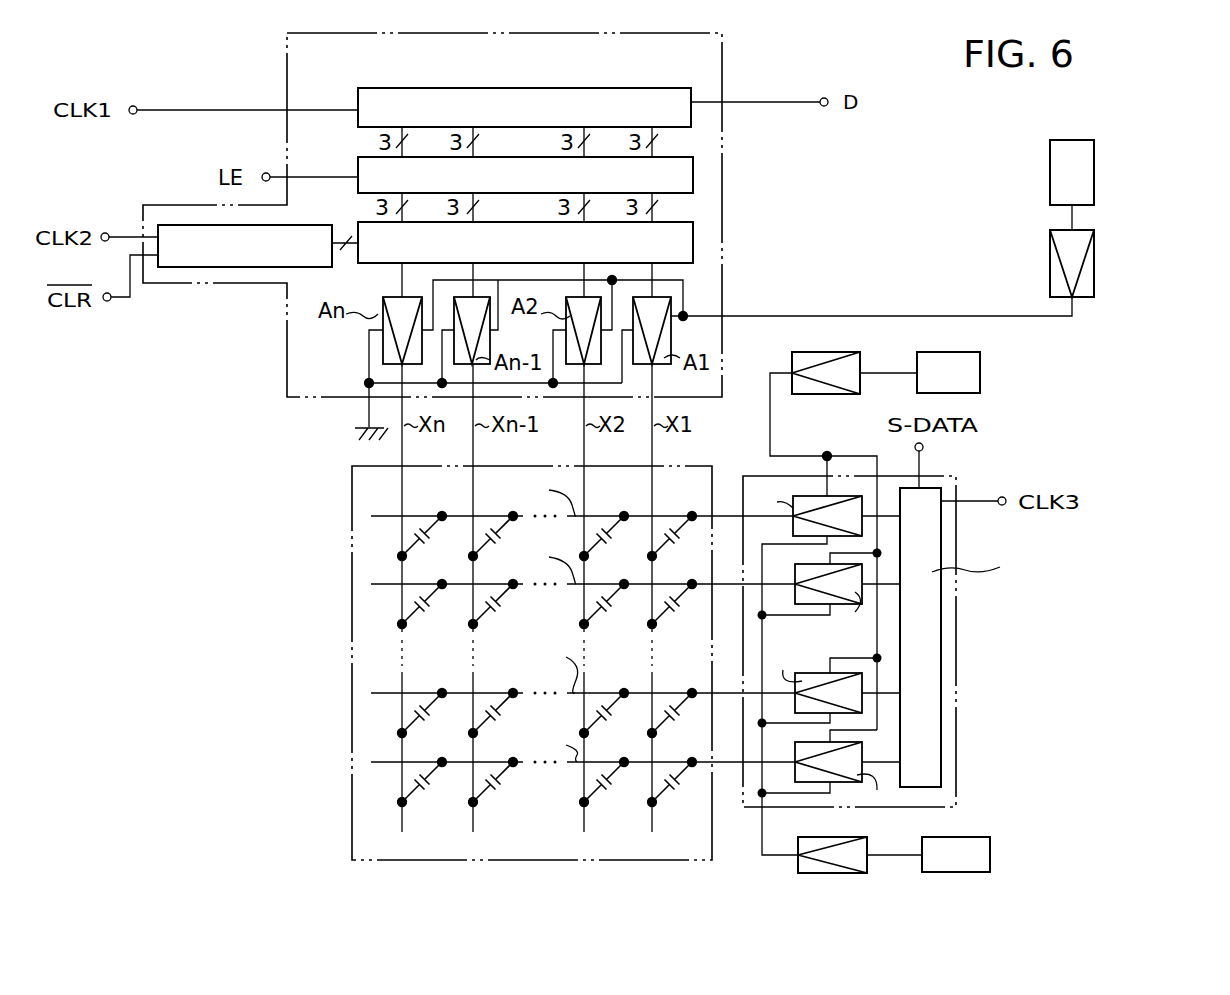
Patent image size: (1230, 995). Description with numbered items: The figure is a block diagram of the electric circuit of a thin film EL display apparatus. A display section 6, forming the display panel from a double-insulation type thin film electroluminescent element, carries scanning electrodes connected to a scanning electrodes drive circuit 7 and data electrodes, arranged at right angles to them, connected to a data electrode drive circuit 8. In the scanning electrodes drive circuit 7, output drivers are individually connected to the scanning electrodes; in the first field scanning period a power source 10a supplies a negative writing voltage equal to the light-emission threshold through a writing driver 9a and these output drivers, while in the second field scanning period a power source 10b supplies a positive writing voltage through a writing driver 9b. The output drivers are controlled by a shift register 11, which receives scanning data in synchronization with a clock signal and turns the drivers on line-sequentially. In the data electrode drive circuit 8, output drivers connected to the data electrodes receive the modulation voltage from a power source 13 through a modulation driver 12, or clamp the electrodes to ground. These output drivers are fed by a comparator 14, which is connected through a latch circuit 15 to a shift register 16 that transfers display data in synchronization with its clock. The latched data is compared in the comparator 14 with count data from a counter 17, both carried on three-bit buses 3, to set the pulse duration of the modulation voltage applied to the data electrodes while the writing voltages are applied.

The 3-bit bus 3 is at (345, 229).
The display section 6 is at (352, 631).
The scanning electrodes drive circuit 7 is at (958, 660).
The data electrode drive circuit 8 is at (703, 62).
The writing driver 9a is at (855, 846).
The writing driver 9b is at (793, 362).
The power source 10a is at (990, 852).
The power source 10b is at (980, 382).
The shift register 11 is at (937, 731).
The modulation driver 12 is at (1082, 285).
The power source 13 is at (1082, 195).
The comparator 14 is at (693, 245).
The latch circuit 15 is at (693, 178).
The shift register 16 is at (497, 95).
The counter 17 is at (182, 232).